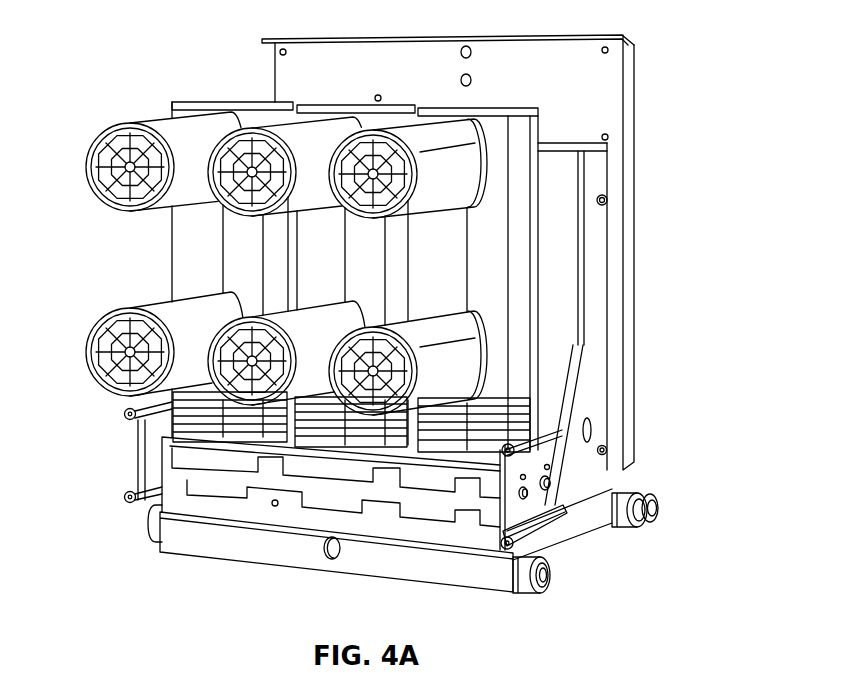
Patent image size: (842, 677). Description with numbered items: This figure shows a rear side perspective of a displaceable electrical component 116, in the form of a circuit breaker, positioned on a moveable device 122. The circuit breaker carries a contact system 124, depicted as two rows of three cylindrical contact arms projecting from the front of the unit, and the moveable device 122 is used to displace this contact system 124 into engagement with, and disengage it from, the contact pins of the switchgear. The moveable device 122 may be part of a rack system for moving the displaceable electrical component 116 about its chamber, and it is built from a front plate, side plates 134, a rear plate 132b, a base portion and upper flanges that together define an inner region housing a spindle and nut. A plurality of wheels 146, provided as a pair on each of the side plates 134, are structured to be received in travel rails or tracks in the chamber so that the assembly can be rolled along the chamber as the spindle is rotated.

The displaceable electrical component 116 is at (400, 65).
The contact system 124 is at (124, 208).
The moveable device 122 is at (478, 572).
The rear plate 132b is at (251, 548).
The side plates 134 is at (570, 545).
The wheels 146 is at (152, 531).